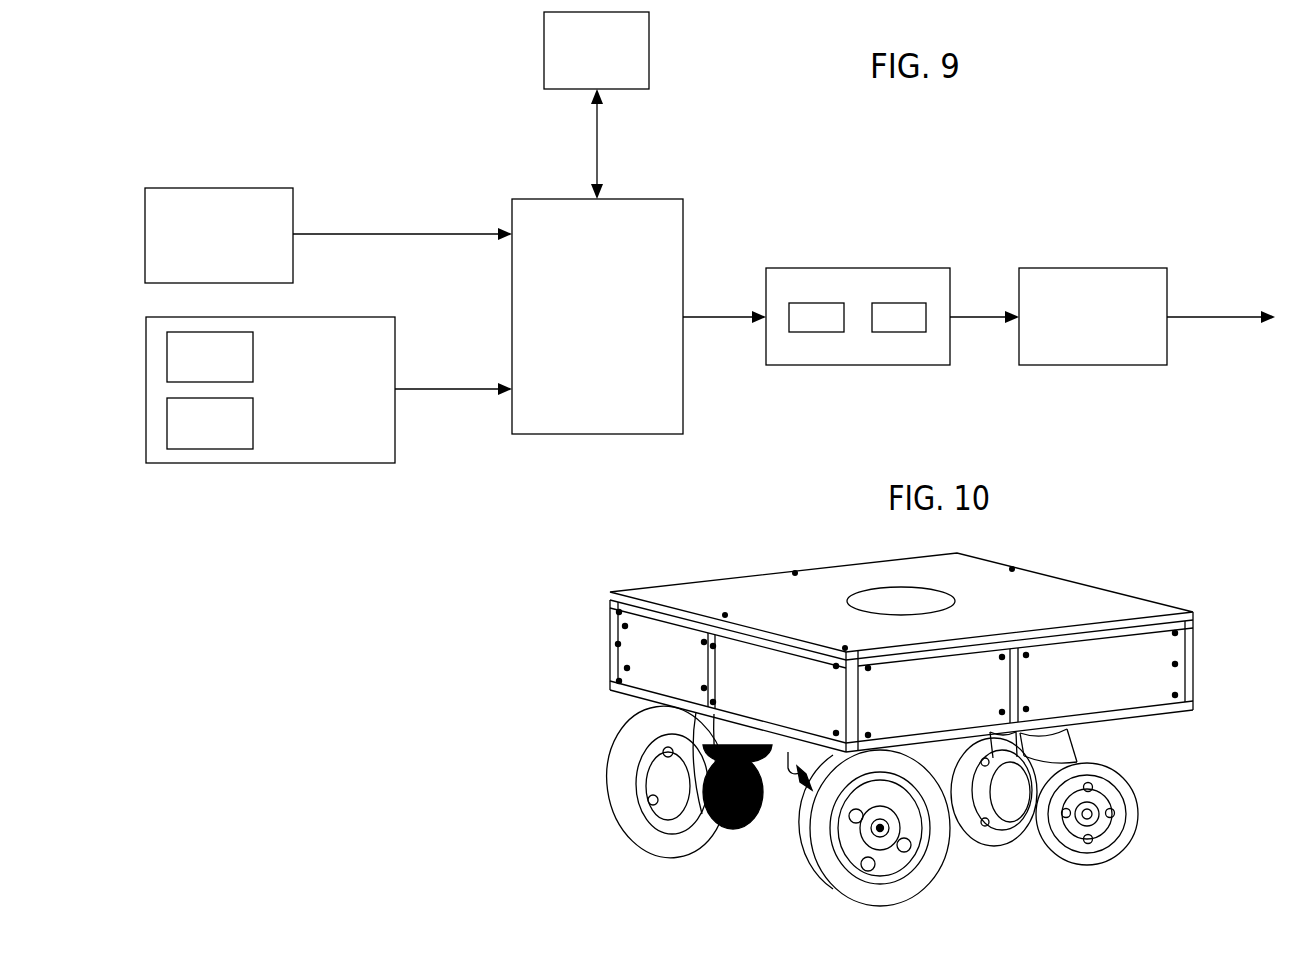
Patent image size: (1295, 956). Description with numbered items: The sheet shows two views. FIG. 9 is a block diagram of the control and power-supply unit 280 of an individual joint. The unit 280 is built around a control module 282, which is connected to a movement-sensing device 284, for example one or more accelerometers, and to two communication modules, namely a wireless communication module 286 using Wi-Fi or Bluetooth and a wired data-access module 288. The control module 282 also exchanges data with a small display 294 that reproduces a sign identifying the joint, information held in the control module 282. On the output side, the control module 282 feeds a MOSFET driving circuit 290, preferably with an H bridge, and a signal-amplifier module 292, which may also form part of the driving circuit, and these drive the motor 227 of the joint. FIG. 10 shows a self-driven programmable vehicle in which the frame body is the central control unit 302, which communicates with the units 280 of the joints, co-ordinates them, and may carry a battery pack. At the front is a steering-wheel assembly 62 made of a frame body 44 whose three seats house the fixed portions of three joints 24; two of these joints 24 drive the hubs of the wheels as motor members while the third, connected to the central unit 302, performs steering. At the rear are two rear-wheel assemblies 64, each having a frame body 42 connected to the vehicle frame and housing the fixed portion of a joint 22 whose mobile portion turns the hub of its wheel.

In FIG. 9, the control and power-supply unit 280 is at (402, 538).
In FIG. 9, the control module 282 is at (580, 418).
In FIG. 9, the movement-sensing device 284 is at (217, 208).
In FIG. 9, the wireless communication module 286 is at (182, 350).
In FIG. 9, the wired data-access module 288 is at (178, 437).
In FIG. 9, the MOSFET driving circuit 290 is at (823, 306).
In FIG. 9, the signal-amplifier module 292 is at (902, 311).
In FIG. 9, the display 294 is at (550, 41).
In FIG. 9, the motor 227 is at (1101, 286).
In FIG. 10, the central control unit 302 is at (1102, 570).
In FIG. 10, the frame body 42 is at (823, 748).
In FIG. 10, the joint 24 is at (992, 786).
In FIG. 10, the frame body 44 is at (1089, 744).
In FIG. 10, the joint 22 is at (660, 772).
In FIG. 10, the rear-wheel assembly 64 is at (648, 870).
In FIG. 10, the front steering-wheel assembly 62 is at (991, 858).